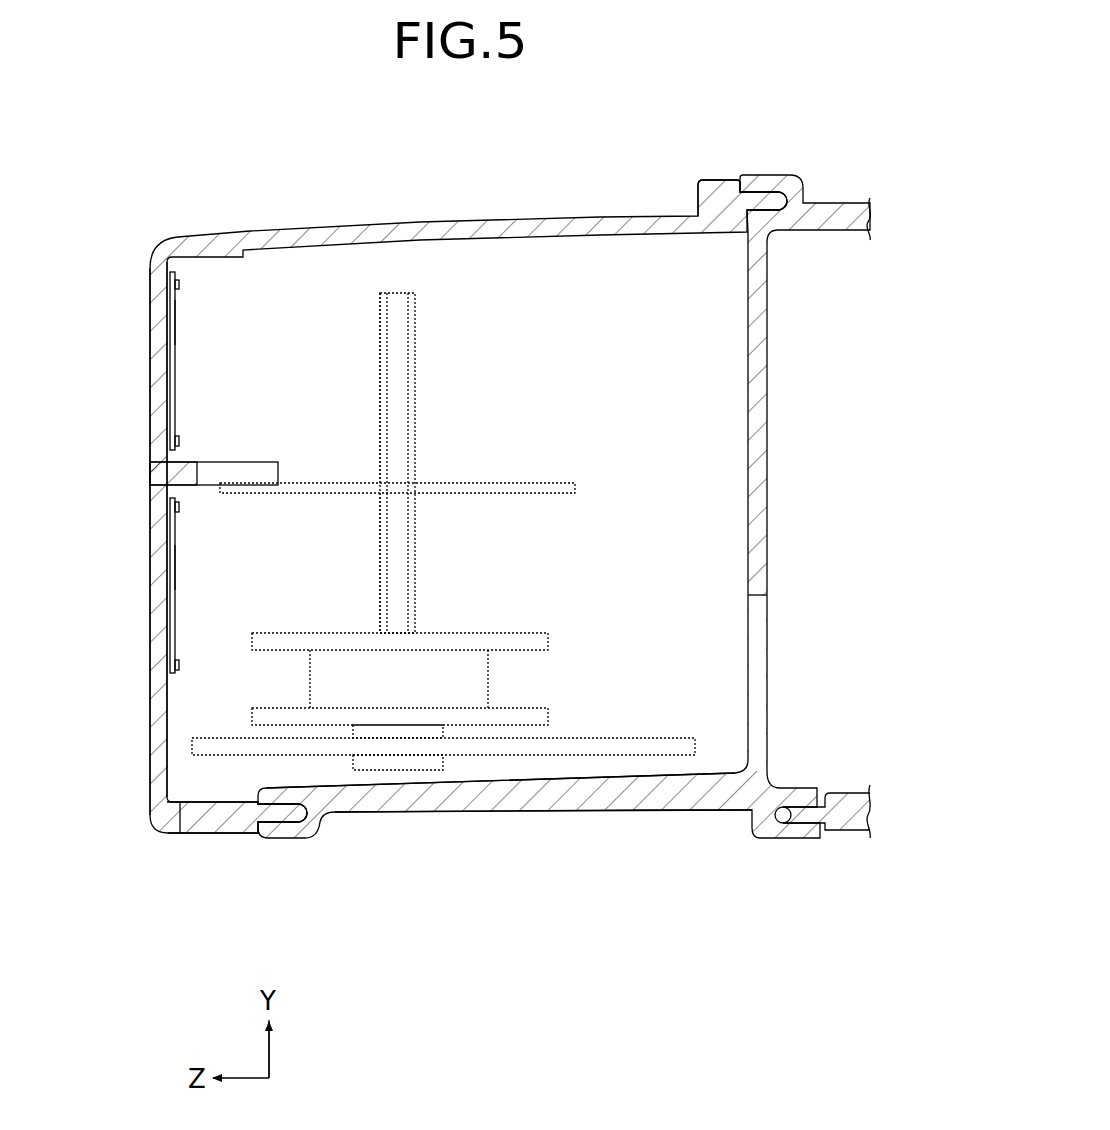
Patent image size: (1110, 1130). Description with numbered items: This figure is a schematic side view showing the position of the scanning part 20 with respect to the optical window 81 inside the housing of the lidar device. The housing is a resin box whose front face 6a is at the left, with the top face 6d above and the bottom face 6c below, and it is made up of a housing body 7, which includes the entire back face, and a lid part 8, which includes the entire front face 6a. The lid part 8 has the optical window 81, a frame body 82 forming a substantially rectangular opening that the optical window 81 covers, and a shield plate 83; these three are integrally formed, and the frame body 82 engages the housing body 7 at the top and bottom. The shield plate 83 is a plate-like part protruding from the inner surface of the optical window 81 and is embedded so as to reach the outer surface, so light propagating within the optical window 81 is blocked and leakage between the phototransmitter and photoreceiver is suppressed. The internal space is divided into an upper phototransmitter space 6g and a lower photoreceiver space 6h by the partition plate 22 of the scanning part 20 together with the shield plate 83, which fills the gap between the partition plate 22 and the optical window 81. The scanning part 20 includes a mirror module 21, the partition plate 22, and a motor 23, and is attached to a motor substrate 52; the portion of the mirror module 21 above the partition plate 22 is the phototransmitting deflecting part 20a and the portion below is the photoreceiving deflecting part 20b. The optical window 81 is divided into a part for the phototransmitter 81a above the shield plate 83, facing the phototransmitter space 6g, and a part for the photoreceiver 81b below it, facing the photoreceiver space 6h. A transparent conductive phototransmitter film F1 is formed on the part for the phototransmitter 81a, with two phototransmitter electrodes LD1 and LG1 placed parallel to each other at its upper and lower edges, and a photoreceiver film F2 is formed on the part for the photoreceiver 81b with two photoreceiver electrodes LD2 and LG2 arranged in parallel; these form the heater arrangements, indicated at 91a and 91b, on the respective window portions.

The lid part 8 is at (175, 168).
The front face 6a is at (150, 523).
The bottom face 6c is at (448, 822).
The top face 6d is at (500, 218).
The phototransmitter space 6g is at (572, 376).
The photoreceiver space 6h is at (572, 556).
The housing body 7 is at (645, 822).
The scanning part 20 is at (455, 519).
The phototransmitting deflecting part 20a is at (415, 395).
The photoreceiving deflecting part 20b is at (415, 552).
The mirror module 21 is at (418, 328).
The partition plate 22 is at (560, 482).
The motor 23 is at (462, 676).
The motor substrate 52 is at (636, 735).
The optical window 81 is at (126, 515).
The part for the phototransmitter 81a is at (183, 380).
The part for the photoreceiver 81b is at (183, 600).
The frame body 82 is at (355, 232).
The shield plate 83 is at (265, 465).
The phototransmitter electrode LD1 is at (180, 284).
The photoreceiver electrode LD2 is at (173, 673).
The phototransmitter film F1 is at (183, 326).
The photoreceiver film F2 is at (183, 565).
The phototransmitter electrode LG1 is at (178, 440).
The photoreceiver electrode LG2 is at (177, 507).
The first optical path 91a is at (265, 355).
The second optical path 91b is at (270, 570).